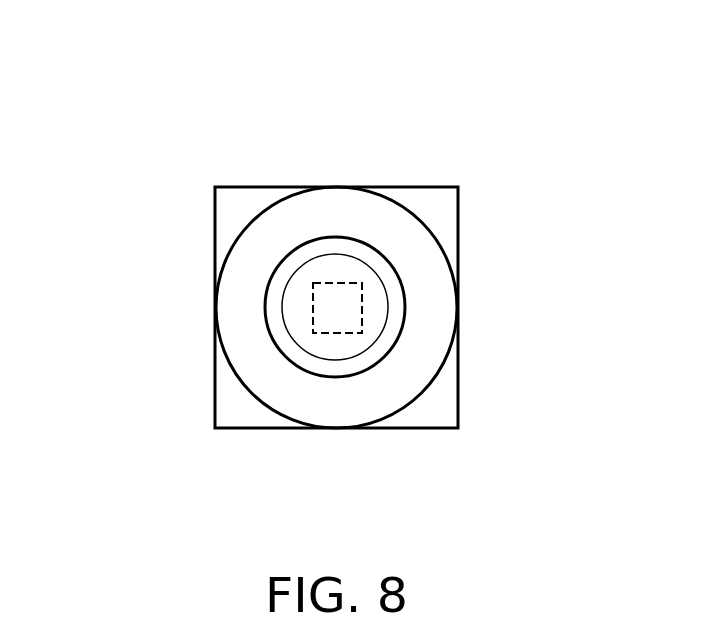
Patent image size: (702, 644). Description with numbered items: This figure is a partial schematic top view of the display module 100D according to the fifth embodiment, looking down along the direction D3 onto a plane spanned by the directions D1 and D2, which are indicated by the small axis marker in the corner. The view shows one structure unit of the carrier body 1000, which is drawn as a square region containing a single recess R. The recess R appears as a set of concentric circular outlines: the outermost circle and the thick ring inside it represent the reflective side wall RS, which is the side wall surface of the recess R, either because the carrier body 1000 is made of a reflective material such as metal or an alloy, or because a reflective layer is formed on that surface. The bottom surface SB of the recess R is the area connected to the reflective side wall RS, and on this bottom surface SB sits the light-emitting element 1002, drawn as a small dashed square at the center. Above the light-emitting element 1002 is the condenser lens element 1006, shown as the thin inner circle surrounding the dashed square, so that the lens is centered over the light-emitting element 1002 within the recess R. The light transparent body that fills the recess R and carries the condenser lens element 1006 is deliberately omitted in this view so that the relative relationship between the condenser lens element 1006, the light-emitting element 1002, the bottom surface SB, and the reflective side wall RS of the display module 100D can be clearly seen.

The carrier body 1000 is at (245, 200).
The light-emitting element 1002 is at (335, 333).
The condenser lens element 1006 is at (390, 308).
The display module 100D is at (578, 512).
The recess R is at (338, 236).
The reflective side wall RS is at (358, 216).
The bottom surface SB is at (386, 265).
The first direction D1 is at (75, 105).
The second direction D2 is at (67, 97).
The third direction D3 is at (69, 127).